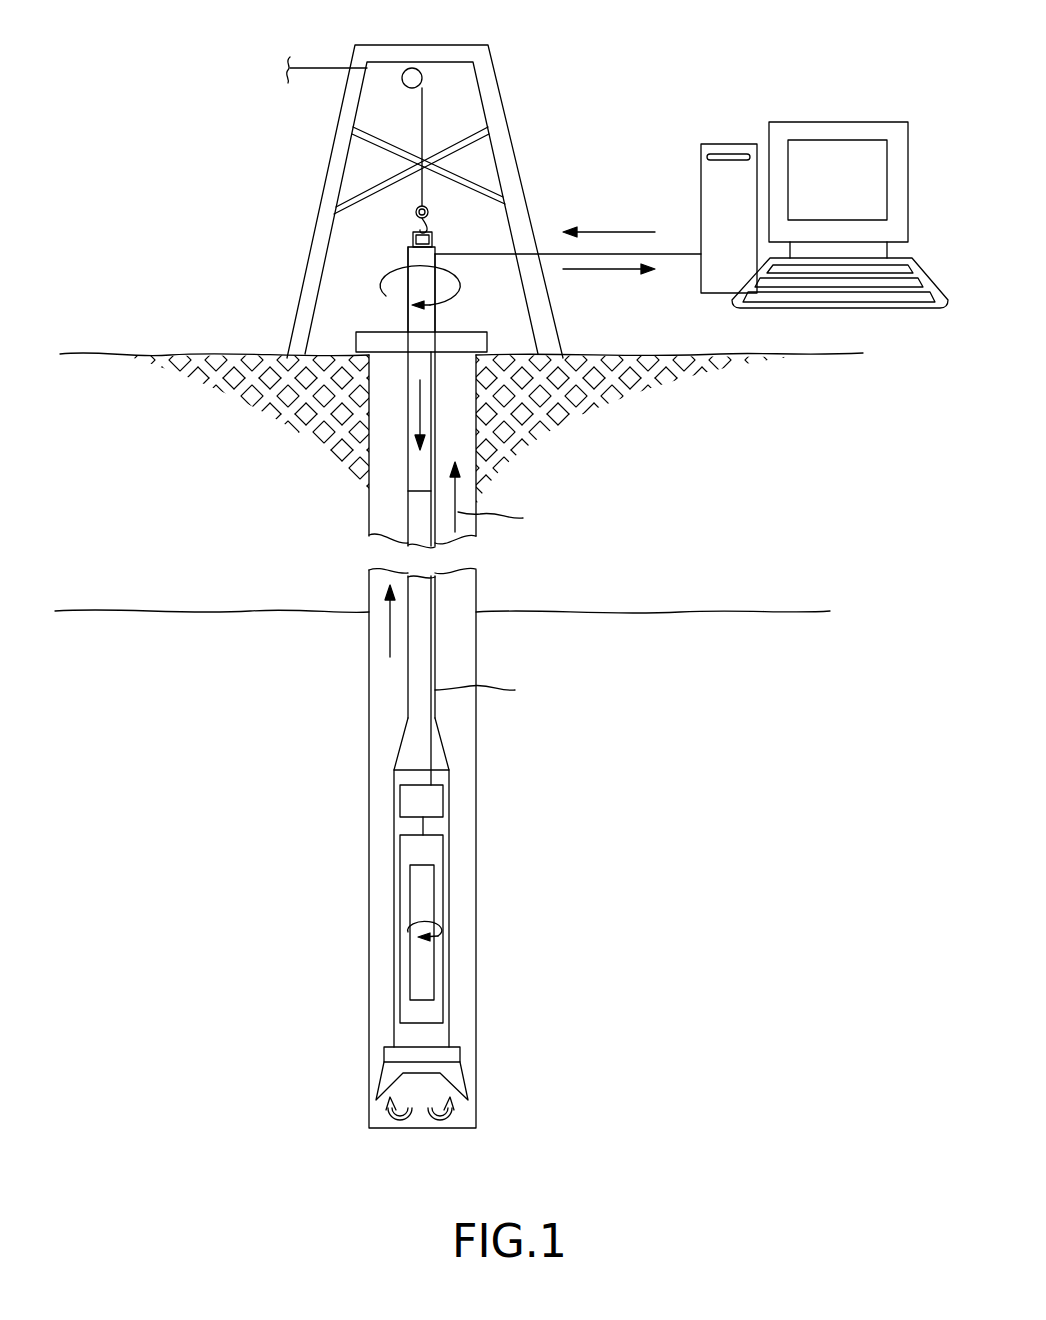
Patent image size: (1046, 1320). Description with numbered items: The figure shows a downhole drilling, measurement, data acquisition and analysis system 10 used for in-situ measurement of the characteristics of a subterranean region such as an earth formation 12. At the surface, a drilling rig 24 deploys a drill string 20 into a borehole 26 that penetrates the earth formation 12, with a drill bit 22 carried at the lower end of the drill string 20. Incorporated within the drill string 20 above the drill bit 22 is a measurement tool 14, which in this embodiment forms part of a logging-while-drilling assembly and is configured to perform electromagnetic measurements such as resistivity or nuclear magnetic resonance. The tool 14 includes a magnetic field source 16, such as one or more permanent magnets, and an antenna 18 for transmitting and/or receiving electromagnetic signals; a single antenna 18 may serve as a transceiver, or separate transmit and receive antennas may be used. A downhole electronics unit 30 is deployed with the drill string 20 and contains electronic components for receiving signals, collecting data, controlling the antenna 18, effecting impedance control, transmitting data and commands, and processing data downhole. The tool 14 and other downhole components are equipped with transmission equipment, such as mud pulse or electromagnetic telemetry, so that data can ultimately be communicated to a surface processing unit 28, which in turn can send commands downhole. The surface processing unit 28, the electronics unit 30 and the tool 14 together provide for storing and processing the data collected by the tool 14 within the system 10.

The downhole drilling, measurement, data acquisition, and/or analysis system 10 is at (202, 263).
The earth formation 12 is at (657, 747).
The measurement tool 14 is at (405, 852).
The magnetic field source 16 is at (425, 880).
The antenna 18 is at (408, 933).
The drill string 20 is at (408, 690).
The drill bit 22 is at (388, 1073).
The drilling rig 24 is at (327, 200).
The borehole 26 is at (387, 501).
The surface processing unit 28 is at (720, 143).
The downhole electronics unit 30 is at (408, 802).